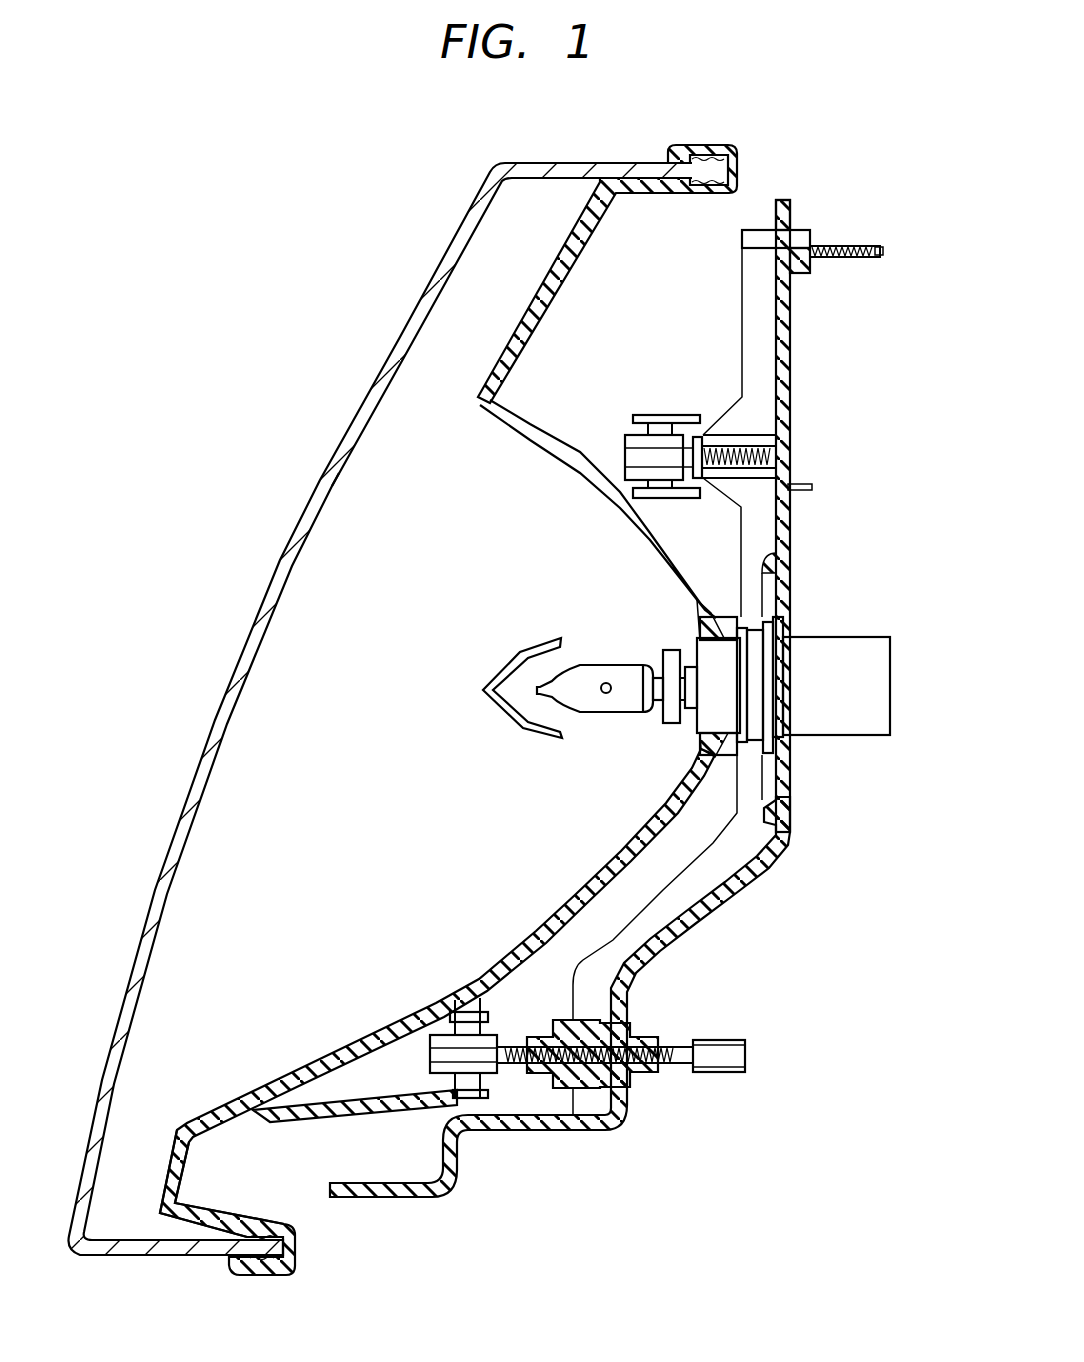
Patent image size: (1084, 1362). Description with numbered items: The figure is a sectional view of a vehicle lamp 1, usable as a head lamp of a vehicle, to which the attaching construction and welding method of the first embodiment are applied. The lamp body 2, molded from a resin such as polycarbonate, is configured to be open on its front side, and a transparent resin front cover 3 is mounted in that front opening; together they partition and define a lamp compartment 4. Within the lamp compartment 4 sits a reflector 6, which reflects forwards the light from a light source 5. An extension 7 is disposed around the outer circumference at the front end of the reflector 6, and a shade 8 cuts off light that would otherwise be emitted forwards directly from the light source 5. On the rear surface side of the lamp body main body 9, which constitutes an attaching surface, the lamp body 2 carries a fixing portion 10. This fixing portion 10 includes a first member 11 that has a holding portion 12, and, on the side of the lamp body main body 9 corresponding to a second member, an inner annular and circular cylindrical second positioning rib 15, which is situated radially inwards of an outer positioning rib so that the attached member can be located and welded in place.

The vehicle lamp 1 is at (240, 186).
The lamp body 2 is at (688, 314).
The front cover 3 is at (394, 344).
The lamp compartment 4 is at (350, 482).
The light source 5 is at (617, 665).
The reflector 6 is at (557, 908).
The extension 7 is at (172, 1170).
The shade 8 is at (529, 640).
The lamp body main body 9 is at (792, 340).
The fixing portion 10 is at (836, 224).
The first member 11 is at (888, 252).
The holding portion 12 is at (864, 262).
The second positioning rib 15 is at (792, 226).